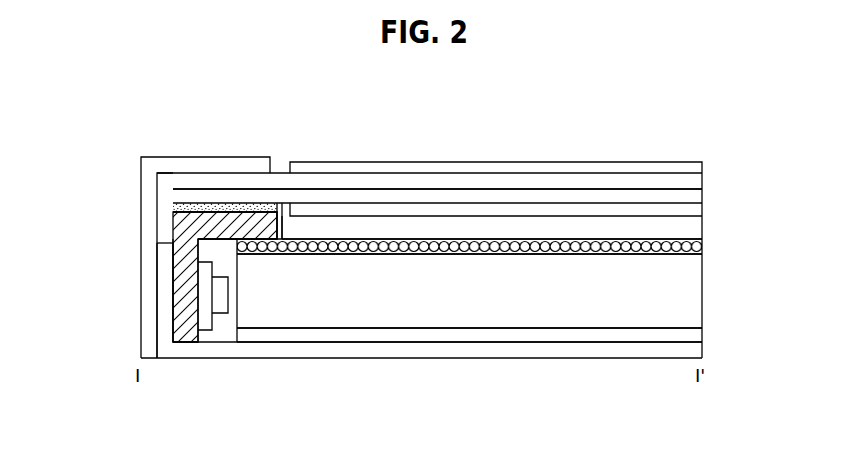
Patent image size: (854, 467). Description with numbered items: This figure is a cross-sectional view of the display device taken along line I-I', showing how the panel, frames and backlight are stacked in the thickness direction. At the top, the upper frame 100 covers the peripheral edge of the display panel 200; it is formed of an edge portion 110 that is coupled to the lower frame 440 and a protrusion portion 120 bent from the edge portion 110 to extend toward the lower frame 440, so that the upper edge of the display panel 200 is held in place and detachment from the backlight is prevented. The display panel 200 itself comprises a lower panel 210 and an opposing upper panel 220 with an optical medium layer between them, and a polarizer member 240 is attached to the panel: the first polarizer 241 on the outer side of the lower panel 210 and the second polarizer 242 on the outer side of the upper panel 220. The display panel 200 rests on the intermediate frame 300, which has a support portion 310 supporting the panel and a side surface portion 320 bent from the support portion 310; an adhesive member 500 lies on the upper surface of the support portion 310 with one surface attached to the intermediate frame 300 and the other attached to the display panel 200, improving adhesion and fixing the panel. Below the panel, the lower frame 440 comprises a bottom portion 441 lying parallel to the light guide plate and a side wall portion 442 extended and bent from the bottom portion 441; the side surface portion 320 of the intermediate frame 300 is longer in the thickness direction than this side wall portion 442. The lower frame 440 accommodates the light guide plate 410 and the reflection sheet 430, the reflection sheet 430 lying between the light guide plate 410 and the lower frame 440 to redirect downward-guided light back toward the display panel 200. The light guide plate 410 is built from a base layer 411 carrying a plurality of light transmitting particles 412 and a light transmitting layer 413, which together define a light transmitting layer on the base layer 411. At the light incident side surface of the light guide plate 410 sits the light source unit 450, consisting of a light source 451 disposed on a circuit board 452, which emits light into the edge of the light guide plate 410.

The upper frame 100 is at (148, 246).
The protrusion portion 120 is at (193, 165).
The edge portion 110 is at (148, 187).
The display panel 200 is at (429, 138).
The upper panel 220 is at (375, 182).
The lower panel 210 is at (446, 197).
The polarizer member 240 is at (496, 145).
The second polarizer 242 is at (542, 170).
The first polarizer 241 is at (611, 210).
The adhesive member 500 is at (235, 208).
The intermediate frame 300 is at (152, 277).
The support portion 310 is at (217, 215).
The side surface portion 320 is at (187, 263).
The lower frame 440 is at (364, 298).
The side wall portion 442 is at (165, 300).
The bottom portion 441 is at (190, 347).
The light source unit 450 is at (217, 356).
The circuit board 452 is at (207, 323).
The light source 451 is at (220, 307).
The light guide plate 410 is at (531, 272).
The light transmitting layer 413 is at (690, 238).
The light transmitting particle 412 is at (700, 248).
The base layer 411 is at (692, 272).
The reflection sheet 430 is at (700, 334).